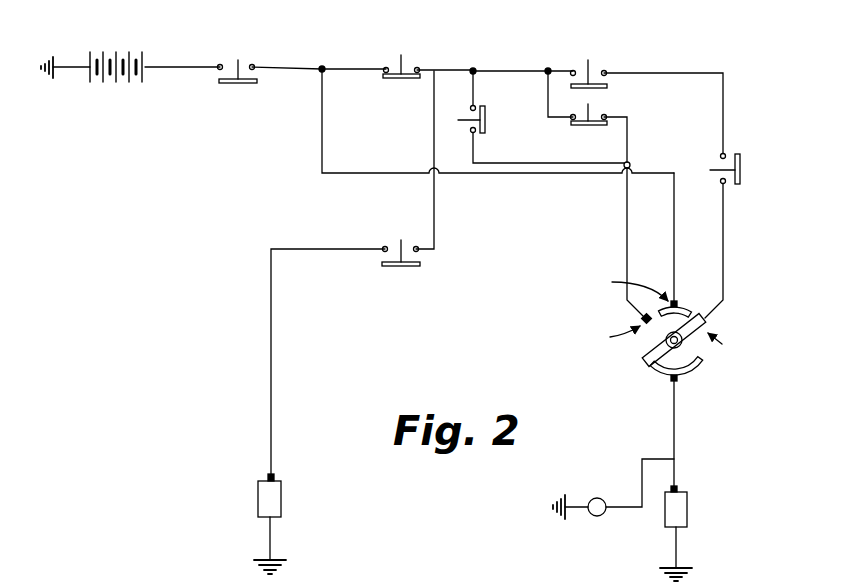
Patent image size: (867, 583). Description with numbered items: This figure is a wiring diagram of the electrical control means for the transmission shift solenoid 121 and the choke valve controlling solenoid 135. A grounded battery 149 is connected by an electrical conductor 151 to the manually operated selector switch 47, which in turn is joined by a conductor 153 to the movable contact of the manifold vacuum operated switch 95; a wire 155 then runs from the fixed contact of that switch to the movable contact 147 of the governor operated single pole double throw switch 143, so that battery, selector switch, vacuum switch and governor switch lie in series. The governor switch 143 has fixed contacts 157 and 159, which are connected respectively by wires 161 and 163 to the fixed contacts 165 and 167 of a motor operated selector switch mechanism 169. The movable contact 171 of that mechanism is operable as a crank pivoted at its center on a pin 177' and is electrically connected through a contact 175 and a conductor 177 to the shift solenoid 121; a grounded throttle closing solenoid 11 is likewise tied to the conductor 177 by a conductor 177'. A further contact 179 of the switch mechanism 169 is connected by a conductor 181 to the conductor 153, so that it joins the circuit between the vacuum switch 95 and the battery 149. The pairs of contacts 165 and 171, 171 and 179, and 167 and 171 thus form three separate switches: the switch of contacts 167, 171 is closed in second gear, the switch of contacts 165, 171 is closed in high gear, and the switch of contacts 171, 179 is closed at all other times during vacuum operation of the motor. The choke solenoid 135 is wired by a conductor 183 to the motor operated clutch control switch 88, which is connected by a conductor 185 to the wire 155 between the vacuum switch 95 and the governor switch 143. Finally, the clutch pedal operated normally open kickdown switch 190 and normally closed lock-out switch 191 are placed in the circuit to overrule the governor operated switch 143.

The grounded solenoid 11 is at (598, 497).
The manually operated selector switch 47 is at (238, 84).
The motor operated clutch control switch 88 is at (398, 268).
The manifold vacuum operated switch 95 is at (400, 82).
The solenoid 121 is at (687, 512).
The grounded choke valve controlling solenoid 135 is at (258, 500).
The single pole double throw switch 143 is at (598, 101).
The movable contact 147 is at (583, 72).
The grounded battery 149 is at (118, 86).
The electrical conductor 151 is at (170, 66).
The conductor 153 is at (344, 69).
The wire 155 is at (452, 71).
The fixed contact 157 is at (600, 125).
The fixed contact 159 is at (577, 68).
The wire 161 is at (625, 226).
The wire 163 is at (727, 247).
The fixed contact 165 is at (644, 322).
The fixed contact 167 is at (712, 320).
The motor operated selector switch mechanism 169 is at (646, 362).
The movable contact 171 is at (661, 358).
The contact 175 is at (700, 370).
The conductor 177 is at (708, 430).
The conductor 177' is at (720, 359).
The contact 179 is at (685, 308).
The conductor 181 is at (566, 178).
The conductor 183 is at (272, 360).
The conductor 185 is at (437, 206).
The normally open breaker switch 190 is at (469, 128).
The normally closed breaker switch 191 is at (742, 172).